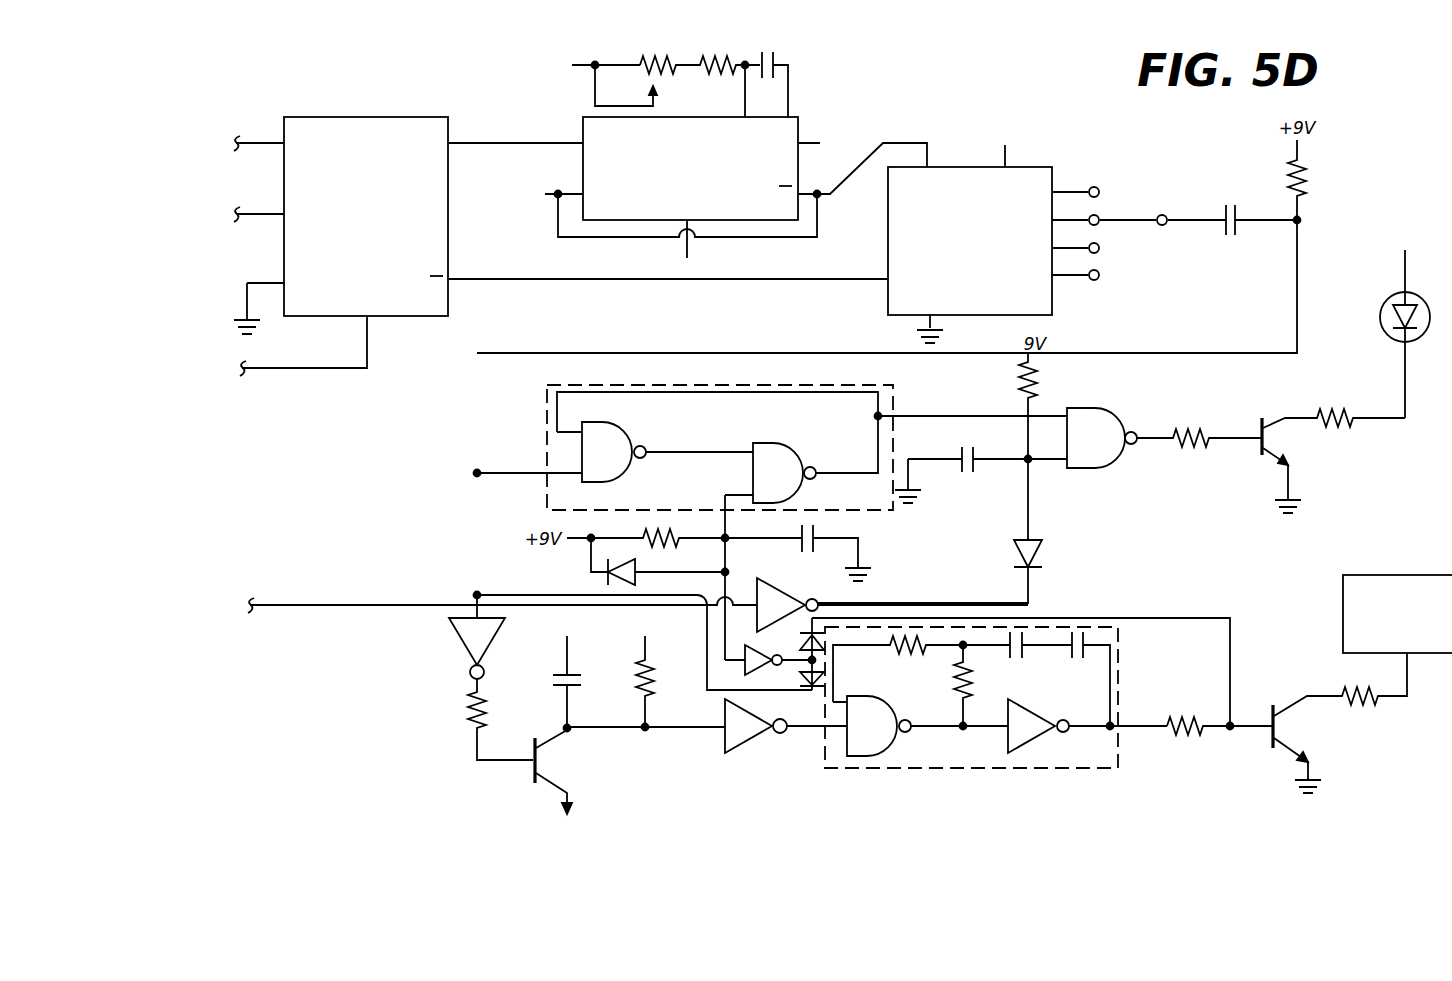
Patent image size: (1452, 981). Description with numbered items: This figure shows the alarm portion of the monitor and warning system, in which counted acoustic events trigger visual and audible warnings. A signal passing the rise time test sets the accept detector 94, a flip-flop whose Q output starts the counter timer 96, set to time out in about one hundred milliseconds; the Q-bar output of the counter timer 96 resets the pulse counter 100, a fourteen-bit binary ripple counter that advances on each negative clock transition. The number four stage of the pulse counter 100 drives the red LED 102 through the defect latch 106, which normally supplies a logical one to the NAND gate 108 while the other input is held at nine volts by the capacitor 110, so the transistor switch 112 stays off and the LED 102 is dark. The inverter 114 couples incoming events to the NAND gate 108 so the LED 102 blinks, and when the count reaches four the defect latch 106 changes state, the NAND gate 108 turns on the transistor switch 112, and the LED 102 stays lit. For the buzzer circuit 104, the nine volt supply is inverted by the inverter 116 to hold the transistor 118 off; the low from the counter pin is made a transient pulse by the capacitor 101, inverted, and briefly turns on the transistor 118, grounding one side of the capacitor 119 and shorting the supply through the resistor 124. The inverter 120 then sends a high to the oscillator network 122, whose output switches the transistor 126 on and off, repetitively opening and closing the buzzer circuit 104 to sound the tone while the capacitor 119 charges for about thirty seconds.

The accept detector 94 is at (348, 160).
The counter timer 96 is at (716, 195).
The pulse counter 100 is at (943, 280).
The capacitor 101 is at (1224, 212).
The red LED 102 is at (1382, 343).
The buzzer circuit 104 is at (1342, 636).
The defect latch 106 is at (895, 389).
The NAND gate 108 is at (1088, 418).
The capacitor 110 is at (950, 440).
The transistor switch 112 is at (1267, 418).
The inverter 114 is at (785, 601).
The inverter 116 is at (466, 635).
The transistor 118 is at (535, 776).
The capacitor 119 is at (553, 680).
The inverter 120 is at (740, 738).
The oscillator network 122 is at (905, 756).
The resistor 124 is at (630, 684).
The transistor 126 is at (1272, 710).